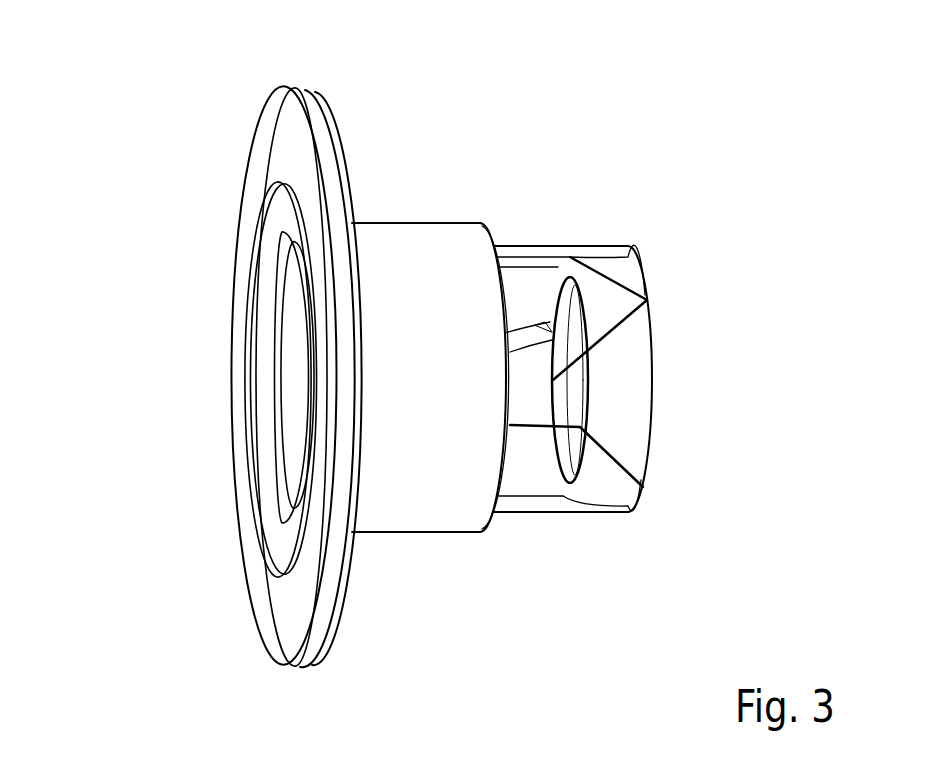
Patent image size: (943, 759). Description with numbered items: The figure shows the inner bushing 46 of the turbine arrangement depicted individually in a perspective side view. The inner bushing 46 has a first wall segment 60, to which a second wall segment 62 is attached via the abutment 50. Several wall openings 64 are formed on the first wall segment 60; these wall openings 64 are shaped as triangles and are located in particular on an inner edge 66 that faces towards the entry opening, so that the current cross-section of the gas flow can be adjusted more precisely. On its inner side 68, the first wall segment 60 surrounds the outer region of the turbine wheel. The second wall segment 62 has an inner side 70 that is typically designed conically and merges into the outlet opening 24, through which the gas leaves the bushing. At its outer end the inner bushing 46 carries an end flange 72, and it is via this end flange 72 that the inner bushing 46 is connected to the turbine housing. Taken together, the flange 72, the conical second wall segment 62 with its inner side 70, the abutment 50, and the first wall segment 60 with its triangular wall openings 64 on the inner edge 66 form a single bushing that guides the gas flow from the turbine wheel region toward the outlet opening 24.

The outlet opening 24 is at (282, 415).
The inner bushing 46 is at (165, 553).
The abutment 50 is at (506, 289).
The first wall segment 60 is at (572, 227).
The second wall segment 62 is at (403, 206).
The wall openings 64 is at (537, 462).
The inner edge 66 is at (655, 398).
The inner side 68 is at (568, 336).
The inner side 70 is at (298, 355).
The end flange 72 is at (308, 94).